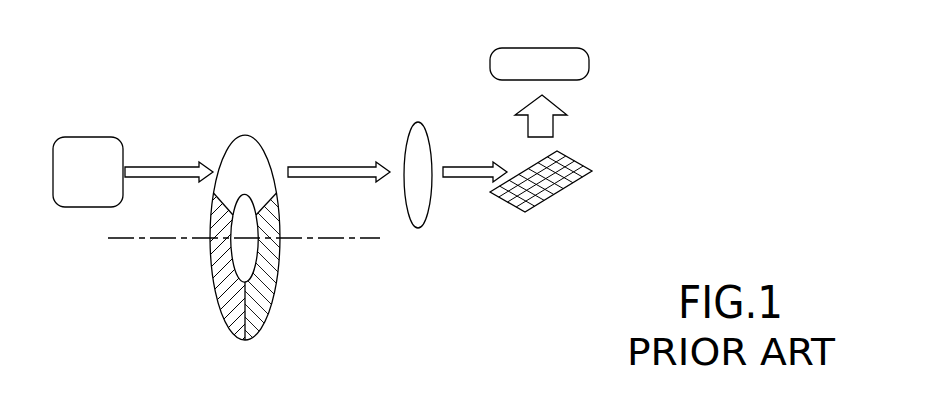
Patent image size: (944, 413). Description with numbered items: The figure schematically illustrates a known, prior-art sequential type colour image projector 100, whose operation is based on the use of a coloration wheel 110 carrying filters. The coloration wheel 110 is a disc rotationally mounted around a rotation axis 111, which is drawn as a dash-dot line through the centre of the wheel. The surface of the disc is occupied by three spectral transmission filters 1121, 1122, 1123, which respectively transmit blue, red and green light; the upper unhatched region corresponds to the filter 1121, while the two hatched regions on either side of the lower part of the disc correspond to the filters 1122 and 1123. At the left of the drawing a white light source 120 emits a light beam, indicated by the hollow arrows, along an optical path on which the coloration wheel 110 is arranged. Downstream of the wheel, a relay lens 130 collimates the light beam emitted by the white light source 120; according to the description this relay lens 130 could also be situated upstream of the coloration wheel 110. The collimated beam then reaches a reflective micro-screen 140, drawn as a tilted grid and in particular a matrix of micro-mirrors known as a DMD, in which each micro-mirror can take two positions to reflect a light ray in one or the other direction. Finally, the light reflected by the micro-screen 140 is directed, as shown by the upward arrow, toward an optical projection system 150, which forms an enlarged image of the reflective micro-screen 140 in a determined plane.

The sequential type projector 100 is at (97, 67).
The coloration wheel 110 is at (245, 193).
The rotation axis 111 is at (333, 241).
The spectral transmission filter 1121 is at (243, 148).
The spectral transmission filter 1122 is at (275, 311).
The spectral transmission filter 1123 is at (221, 309).
The white light source 120 is at (75, 197).
The relay lens 130 is at (418, 226).
The reflective micro-screen 140 is at (558, 184).
The optical projection system 150 is at (578, 60).